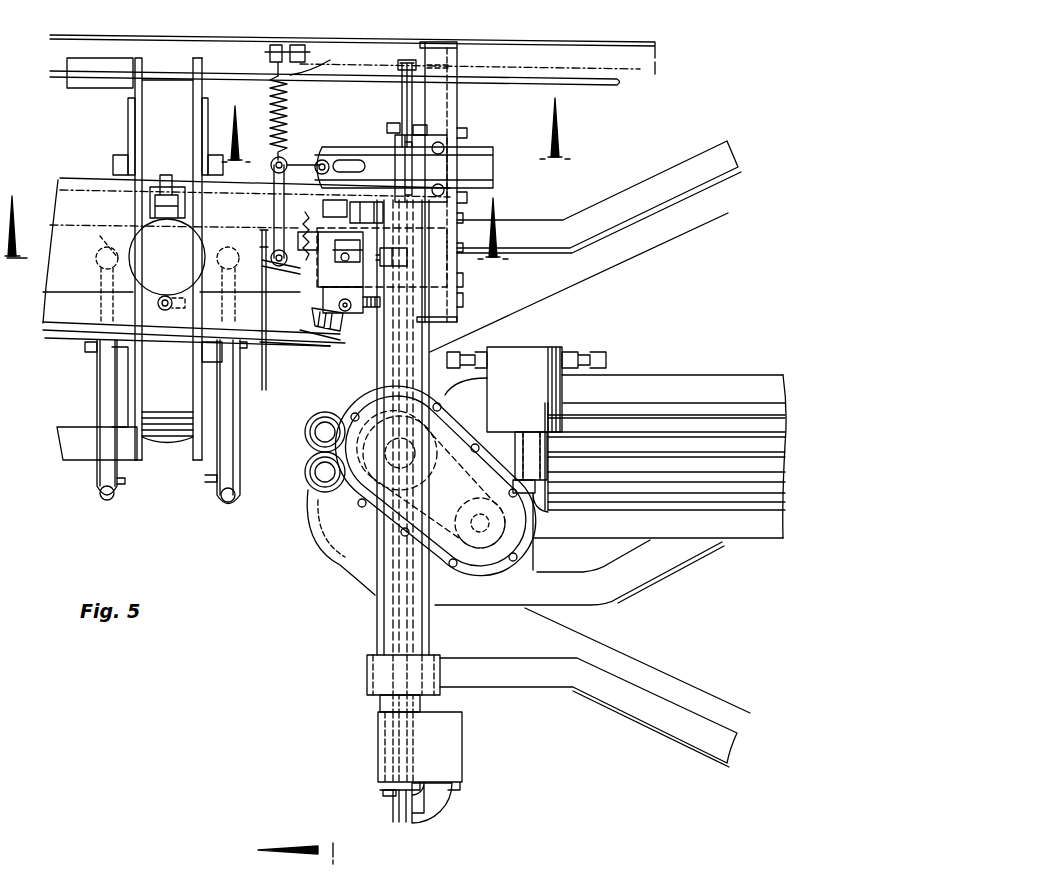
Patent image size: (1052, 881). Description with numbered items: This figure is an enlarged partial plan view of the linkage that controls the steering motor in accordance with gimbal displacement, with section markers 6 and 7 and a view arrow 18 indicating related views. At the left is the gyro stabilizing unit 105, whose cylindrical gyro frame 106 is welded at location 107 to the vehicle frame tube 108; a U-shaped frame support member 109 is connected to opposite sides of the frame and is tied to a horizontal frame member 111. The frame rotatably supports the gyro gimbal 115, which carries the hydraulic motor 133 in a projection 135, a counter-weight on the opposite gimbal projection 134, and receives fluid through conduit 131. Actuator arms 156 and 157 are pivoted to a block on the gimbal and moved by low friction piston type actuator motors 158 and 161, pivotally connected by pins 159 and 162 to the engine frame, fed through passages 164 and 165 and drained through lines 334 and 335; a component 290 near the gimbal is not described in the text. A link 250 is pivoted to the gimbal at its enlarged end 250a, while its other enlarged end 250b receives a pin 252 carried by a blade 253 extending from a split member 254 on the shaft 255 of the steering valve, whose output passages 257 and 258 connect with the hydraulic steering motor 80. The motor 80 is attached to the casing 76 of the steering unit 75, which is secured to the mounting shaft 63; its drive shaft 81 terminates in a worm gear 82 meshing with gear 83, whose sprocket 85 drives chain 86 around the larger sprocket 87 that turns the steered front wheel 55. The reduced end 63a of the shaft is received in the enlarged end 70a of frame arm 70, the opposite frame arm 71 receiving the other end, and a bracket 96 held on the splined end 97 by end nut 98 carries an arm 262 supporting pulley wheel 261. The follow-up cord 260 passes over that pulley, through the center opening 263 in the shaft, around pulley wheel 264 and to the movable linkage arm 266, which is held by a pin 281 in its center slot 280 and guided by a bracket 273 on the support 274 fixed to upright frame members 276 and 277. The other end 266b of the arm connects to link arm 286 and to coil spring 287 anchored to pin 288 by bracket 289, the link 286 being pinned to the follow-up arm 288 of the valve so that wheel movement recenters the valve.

The section line 6- 6 is at (255, 245).
The section line 7- 7 is at (396, 146).
The view direction arrow 18 is at (295, 840).
The steered front wheel 55 is at (703, 378).
The mounting shaft 63 is at (432, 636).
The reduced end of shaft 63a is at (422, 702).
The frame arm 70 is at (588, 712).
The enlarged end of frame arm 70a is at (365, 682).
The frame arm 71 is at (620, 200).
The steering unit 75 is at (388, 543).
The casing 76 is at (392, 440).
The hydraulic steering motor 80 is at (545, 352).
The drive shaft 81 is at (550, 452).
The worm gear 82 is at (537, 526).
The gear 83 is at (525, 572).
The sprocket 85 is at (431, 479).
The chain 86 is at (452, 568).
The larger sprocket 87 is at (345, 508).
The bracket 96 is at (462, 756).
The splined end 97 is at (385, 745).
The end nut 98 is at (385, 795).
The gyro stabilizing unit 105 is at (60, 162).
The cylindrical gyro frame 106 is at (166, 76).
The welding location 107 is at (200, 68).
The vehicle frame tube 108 is at (235, 52).
The U-shaped frame support member 109 is at (105, 62).
The horizontal frame member 111 is at (118, 230).
The gyro gimbal 115 is at (302, 352).
The conduit 131 is at (166, 174).
The hydraulic motor 133 is at (126, 130).
The gimbal projection 134 is at (232, 352).
The projection 135 is at (112, 166).
The actuator arm 156 is at (244, 246).
The actuator arm 157 is at (98, 280).
The low friction piston type actuator motor 158 is at (232, 440).
The pin 159 is at (232, 505).
The low friction piston type actuator motor 161 is at (98, 405).
The pin 162 is at (100, 500).
The passage 164 is at (210, 485).
The passage 165 is at (124, 482).
The link 250 is at (316, 332).
The enlarged end of link 250a is at (165, 311).
The enlarged end of link 250b is at (340, 325).
The pin 252 is at (330, 300).
The blade 253 is at (365, 282).
The split member 254 is at (363, 252).
The shaft 255 is at (337, 232).
The output passage 257 is at (604, 356).
The output passage 258 is at (462, 350).
The follow-up cord 260 is at (407, 108).
The pulley wheel 261 is at (392, 822).
The arm 262 is at (442, 808).
The center opening 263 is at (392, 624).
The pulley wheel 264 is at (400, 58).
The movable linkage arm 266 is at (388, 105).
The end of linkage arm 266b is at (286, 162).
The bracket 273 is at (462, 150).
The support 274 is at (445, 108).
The upright frame member 276 is at (456, 318).
The upright frame member 277 is at (443, 42).
The center slot 280 is at (375, 160).
The pin 281 is at (315, 164).
The link arm 286 is at (274, 205).
The coil spring 287 is at (290, 98).
The pin 288 is at (272, 50).
The bracket 289 is at (312, 70).
The gauge 290 is at (250, 292).
The line 334 is at (245, 345).
The line 335 is at (82, 346).